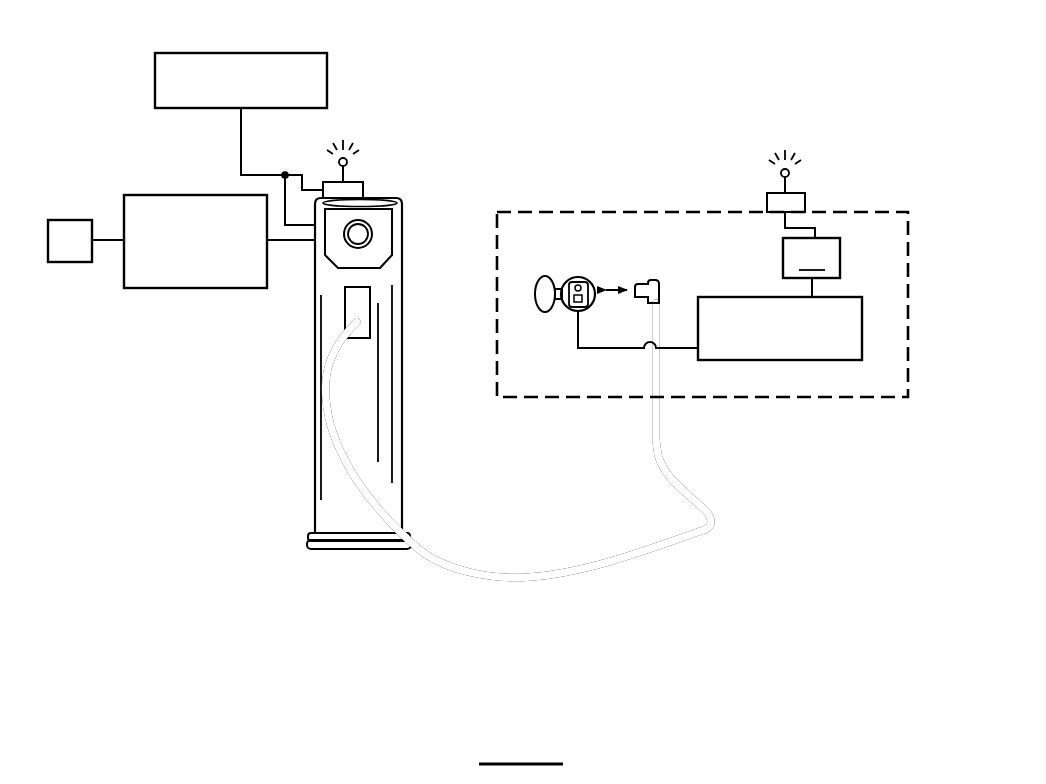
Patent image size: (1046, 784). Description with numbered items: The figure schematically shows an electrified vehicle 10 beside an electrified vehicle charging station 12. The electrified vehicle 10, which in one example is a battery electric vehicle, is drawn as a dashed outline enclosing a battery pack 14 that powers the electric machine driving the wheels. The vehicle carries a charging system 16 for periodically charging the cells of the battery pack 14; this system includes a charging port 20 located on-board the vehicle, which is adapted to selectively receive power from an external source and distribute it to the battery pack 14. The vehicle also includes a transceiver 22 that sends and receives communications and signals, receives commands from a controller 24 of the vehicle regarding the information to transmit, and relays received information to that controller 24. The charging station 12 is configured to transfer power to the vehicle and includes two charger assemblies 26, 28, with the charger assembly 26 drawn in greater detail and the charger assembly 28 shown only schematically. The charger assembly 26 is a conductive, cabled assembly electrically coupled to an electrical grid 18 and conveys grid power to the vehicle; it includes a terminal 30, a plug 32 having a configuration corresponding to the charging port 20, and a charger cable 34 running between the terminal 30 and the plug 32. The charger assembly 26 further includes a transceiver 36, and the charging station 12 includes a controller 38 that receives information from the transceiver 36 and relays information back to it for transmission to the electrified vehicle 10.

The electrified vehicle 10 is at (893, 180).
The electrified vehicle charging station 12 is at (226, 482).
The battery pack 14 is at (788, 345).
The charging system 16 is at (620, 203).
The electrical grid 18 is at (162, 195).
The charging port 20 is at (571, 268).
The transceiver 22 is at (766, 205).
The controller 24 is at (811, 267).
The charger assembly 26 is at (371, 190).
The charger assembly 28 is at (70, 220).
The terminal 30 is at (384, 327).
The plug 32 is at (650, 281).
The charger cable 34 is at (620, 565).
The transceiver 36 is at (323, 177).
The controller 38 is at (286, 52).